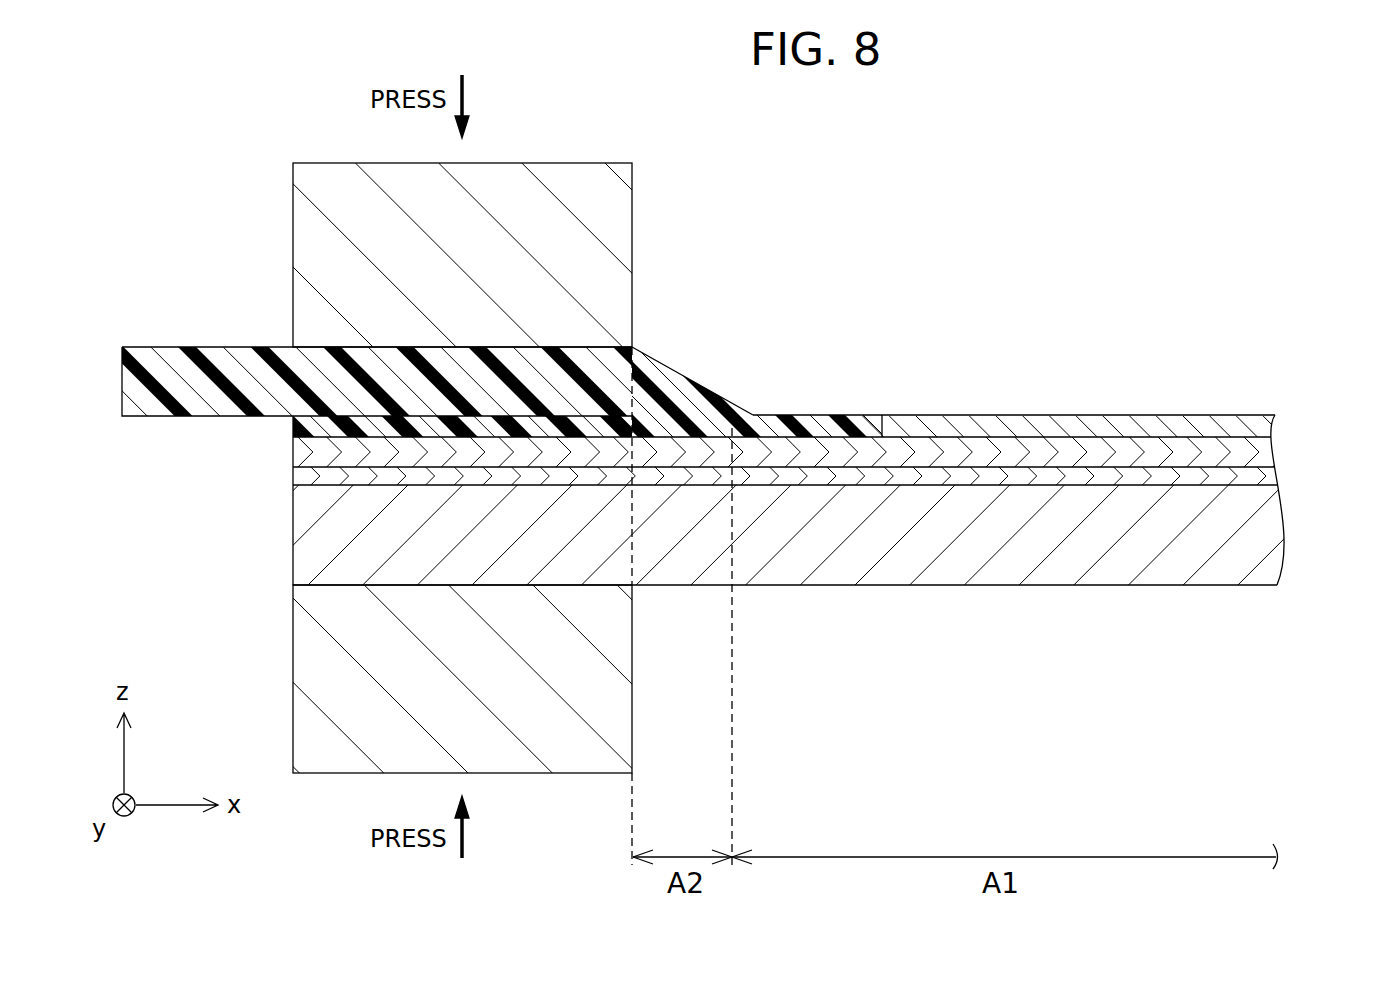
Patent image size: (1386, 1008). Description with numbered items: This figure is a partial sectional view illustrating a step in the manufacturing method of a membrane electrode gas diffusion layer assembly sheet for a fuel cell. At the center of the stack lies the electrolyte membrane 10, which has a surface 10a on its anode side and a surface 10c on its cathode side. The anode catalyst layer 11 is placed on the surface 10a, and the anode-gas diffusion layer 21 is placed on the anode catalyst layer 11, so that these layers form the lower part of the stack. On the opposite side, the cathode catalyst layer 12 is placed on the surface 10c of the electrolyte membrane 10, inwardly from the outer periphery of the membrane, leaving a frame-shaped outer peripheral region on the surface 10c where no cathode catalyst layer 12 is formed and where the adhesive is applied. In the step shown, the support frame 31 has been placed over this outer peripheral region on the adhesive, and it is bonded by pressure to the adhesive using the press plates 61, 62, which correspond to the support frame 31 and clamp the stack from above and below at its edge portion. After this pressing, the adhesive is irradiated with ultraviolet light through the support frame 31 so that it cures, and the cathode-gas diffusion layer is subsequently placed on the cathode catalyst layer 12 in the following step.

The press plate 62 is at (303, 258).
The press plate 61 is at (302, 681).
The support frame 31 is at (133, 383).
The cathode catalyst layer 12 is at (1245, 427).
The electrolyte membrane 10 is at (1250, 452).
The surface on cathode side 10c is at (1212, 435).
The surface on anode side 10a is at (1205, 486).
The anode catalyst layer 11 is at (1262, 477).
The anode-gas diffusion layer 21 is at (1257, 553).